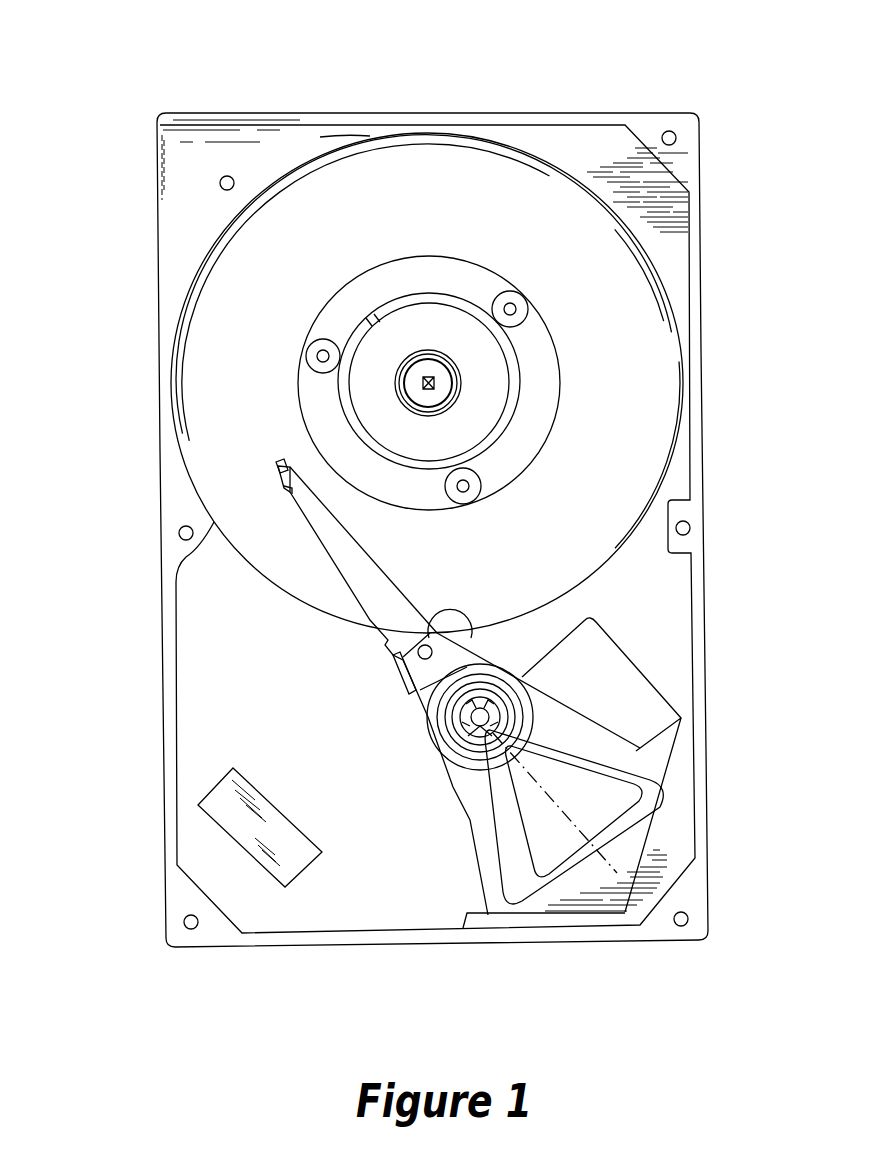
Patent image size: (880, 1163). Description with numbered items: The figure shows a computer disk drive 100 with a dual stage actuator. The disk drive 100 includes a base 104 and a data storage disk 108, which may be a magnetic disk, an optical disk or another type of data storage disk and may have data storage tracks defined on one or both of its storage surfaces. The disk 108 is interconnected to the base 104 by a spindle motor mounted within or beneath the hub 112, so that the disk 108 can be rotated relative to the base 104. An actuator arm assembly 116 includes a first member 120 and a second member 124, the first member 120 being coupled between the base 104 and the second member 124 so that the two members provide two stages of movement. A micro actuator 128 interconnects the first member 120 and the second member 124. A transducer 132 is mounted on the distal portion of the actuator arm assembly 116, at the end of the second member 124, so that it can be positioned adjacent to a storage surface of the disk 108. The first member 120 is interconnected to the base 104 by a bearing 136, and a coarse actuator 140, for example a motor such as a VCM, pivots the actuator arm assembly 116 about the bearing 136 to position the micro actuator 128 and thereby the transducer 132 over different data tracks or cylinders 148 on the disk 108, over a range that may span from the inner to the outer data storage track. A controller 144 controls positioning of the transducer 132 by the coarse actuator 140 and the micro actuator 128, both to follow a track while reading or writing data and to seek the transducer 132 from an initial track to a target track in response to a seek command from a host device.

The disk drive 100 is at (438, 92).
The base 104 is at (677, 608).
The data storage disk 108 is at (655, 349).
The hub 112 is at (417, 393).
The actuator arm assembly 116 is at (323, 552).
The first member 120 is at (350, 590).
The second member 124 is at (283, 478).
The micro actuator 128 is at (288, 493).
The transducer 132 is at (277, 466).
The bearing 136 is at (474, 738).
The coarse actuator 140 is at (540, 883).
The controller 144 is at (242, 838).
The data tracks or cylinders 148 is at (343, 140).